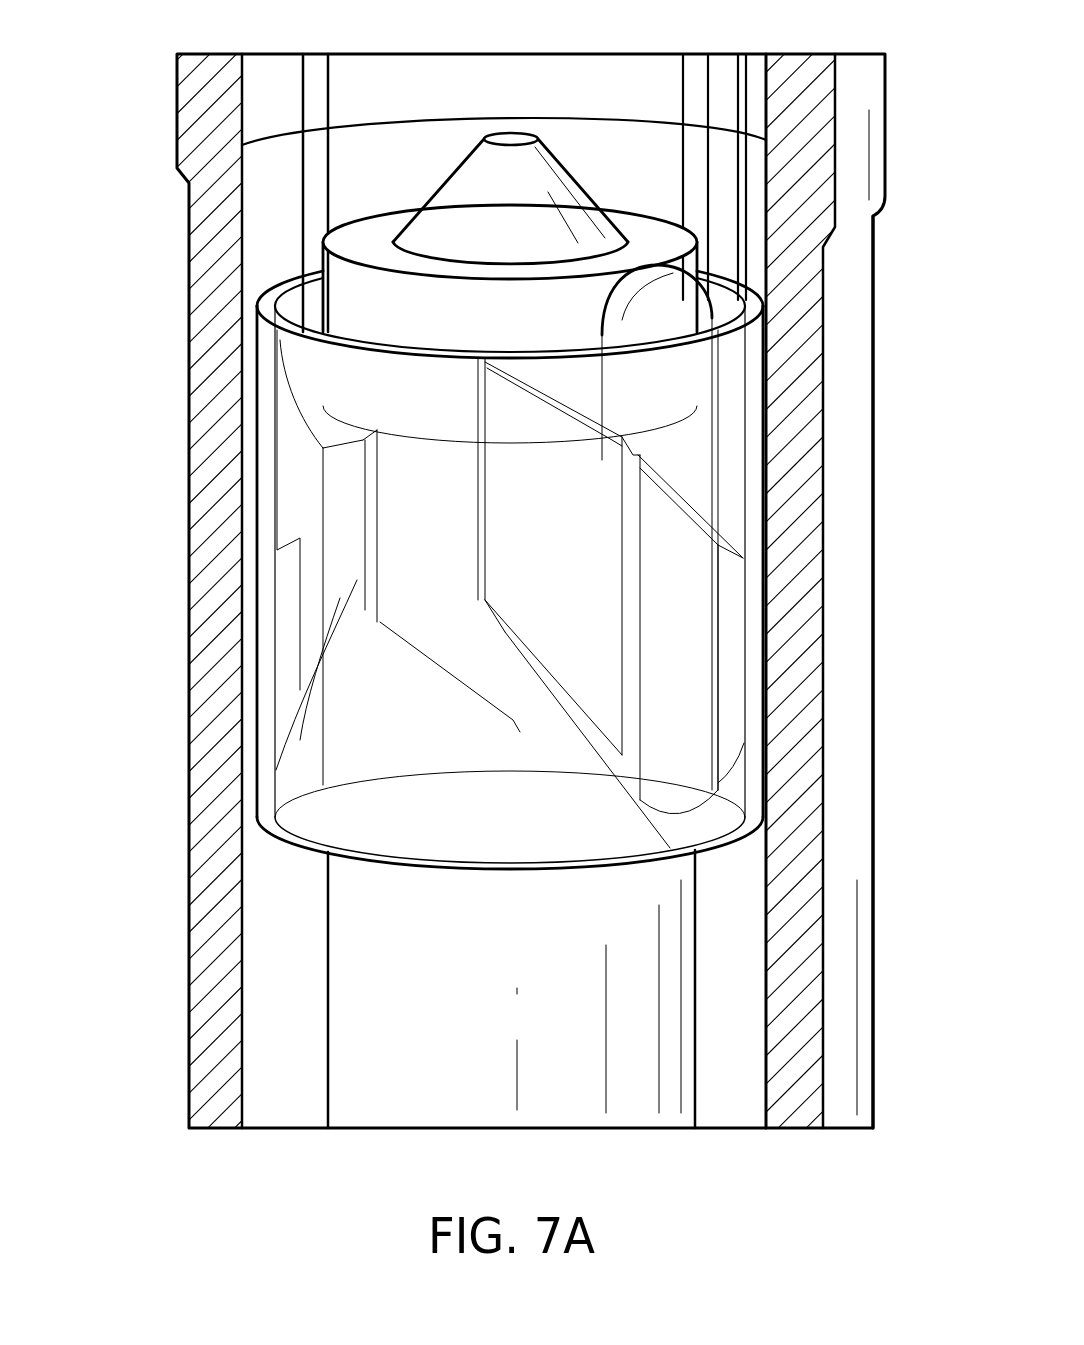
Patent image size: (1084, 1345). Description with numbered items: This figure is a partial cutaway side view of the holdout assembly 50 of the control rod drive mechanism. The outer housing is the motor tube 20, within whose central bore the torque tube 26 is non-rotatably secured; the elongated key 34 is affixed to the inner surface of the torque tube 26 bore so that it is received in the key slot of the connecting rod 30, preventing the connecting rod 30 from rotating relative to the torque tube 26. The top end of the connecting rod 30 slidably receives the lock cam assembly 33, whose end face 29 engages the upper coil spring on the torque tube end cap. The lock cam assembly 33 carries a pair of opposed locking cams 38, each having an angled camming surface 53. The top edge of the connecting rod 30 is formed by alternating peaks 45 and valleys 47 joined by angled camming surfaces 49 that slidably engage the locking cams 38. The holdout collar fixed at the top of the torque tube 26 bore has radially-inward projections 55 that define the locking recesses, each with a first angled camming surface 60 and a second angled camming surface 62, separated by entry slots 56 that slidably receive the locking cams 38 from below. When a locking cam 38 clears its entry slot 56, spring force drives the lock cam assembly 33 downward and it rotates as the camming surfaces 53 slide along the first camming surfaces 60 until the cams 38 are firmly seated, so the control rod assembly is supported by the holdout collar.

The motor tube 20 is at (855, 718).
The torque tube 26 is at (742, 985).
The end face 29 is at (669, 217).
The connecting rod 30 is at (603, 1063).
The lock cam assembly 33 is at (413, 148).
The elongated key 34 is at (765, 1062).
The locking cam 38 is at (673, 312).
The peak 45 is at (378, 645).
The valley 47 is at (514, 748).
The angled camming surface 49 is at (447, 672).
The holdout assembly 50 is at (138, 331).
The angled camming surface 53 is at (681, 497).
The projection 55 is at (599, 828).
The entry slot 56 is at (397, 828).
The first angled camming surface 60 is at (637, 429).
The second angled camming surface 62 is at (320, 397).